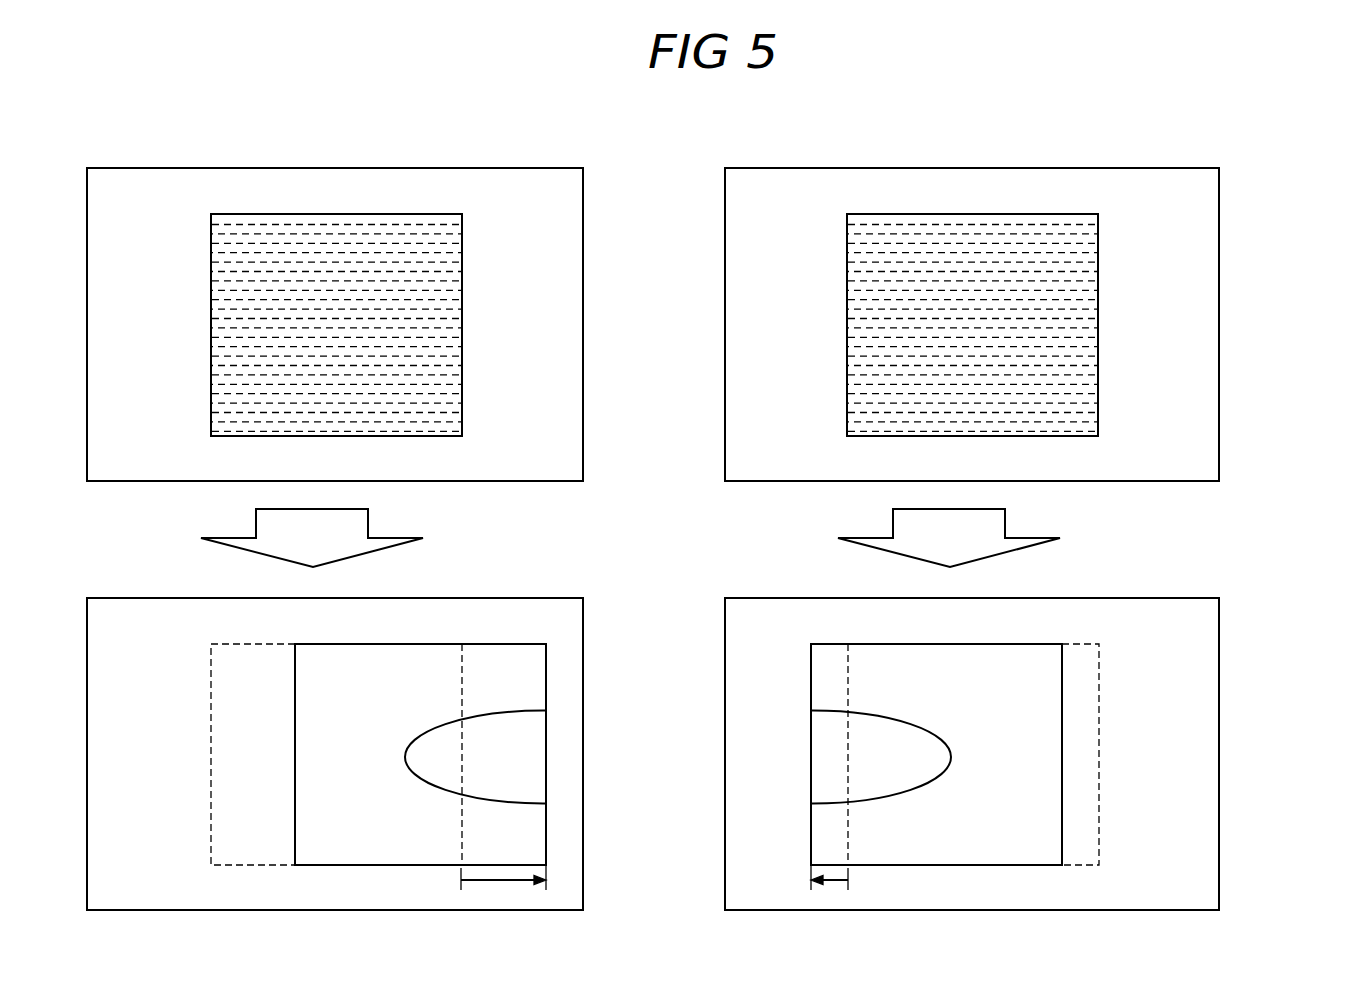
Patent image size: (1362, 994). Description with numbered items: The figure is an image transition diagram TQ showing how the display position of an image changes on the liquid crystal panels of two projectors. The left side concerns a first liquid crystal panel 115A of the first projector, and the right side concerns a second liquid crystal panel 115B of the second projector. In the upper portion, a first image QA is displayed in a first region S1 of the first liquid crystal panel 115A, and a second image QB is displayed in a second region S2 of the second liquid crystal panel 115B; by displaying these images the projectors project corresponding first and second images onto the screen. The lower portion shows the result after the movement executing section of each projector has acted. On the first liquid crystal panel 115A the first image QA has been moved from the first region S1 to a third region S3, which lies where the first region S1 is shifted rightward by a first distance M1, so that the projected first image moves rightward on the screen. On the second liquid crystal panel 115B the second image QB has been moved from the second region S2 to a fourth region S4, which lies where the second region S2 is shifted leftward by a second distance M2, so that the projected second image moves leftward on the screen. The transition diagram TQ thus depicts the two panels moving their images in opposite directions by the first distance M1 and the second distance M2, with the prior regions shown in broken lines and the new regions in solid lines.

The first liquid crystal panel 115A is at (452, 168).
The second liquid crystal panel 115B is at (1088, 168).
The first region S1 is at (291, 214).
The second region S2 is at (927, 214).
The third region S3 is at (398, 644).
The fourth region S4 is at (928, 644).
The first image QA is at (446, 521).
The second image QB is at (925, 521).
The first distance M1 is at (503, 889).
The second distance M2 is at (829, 889).
The image transition diagram TQ is at (1253, 150).